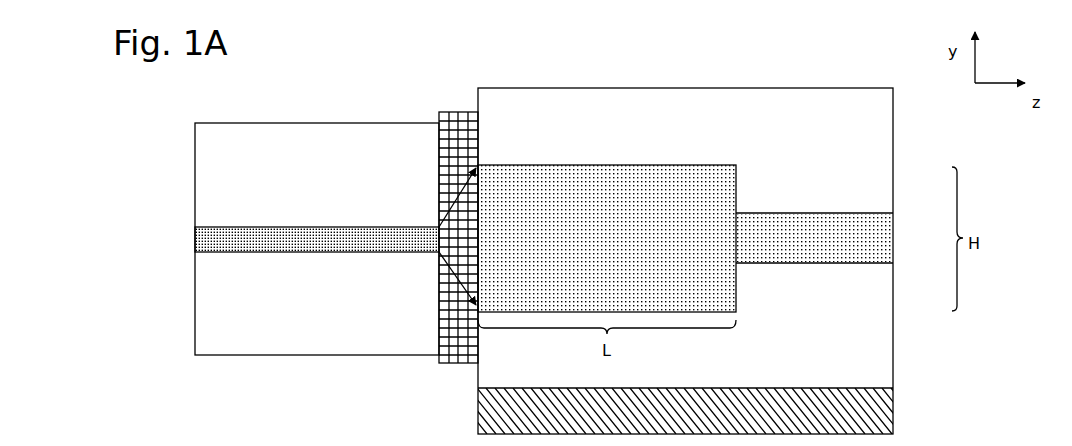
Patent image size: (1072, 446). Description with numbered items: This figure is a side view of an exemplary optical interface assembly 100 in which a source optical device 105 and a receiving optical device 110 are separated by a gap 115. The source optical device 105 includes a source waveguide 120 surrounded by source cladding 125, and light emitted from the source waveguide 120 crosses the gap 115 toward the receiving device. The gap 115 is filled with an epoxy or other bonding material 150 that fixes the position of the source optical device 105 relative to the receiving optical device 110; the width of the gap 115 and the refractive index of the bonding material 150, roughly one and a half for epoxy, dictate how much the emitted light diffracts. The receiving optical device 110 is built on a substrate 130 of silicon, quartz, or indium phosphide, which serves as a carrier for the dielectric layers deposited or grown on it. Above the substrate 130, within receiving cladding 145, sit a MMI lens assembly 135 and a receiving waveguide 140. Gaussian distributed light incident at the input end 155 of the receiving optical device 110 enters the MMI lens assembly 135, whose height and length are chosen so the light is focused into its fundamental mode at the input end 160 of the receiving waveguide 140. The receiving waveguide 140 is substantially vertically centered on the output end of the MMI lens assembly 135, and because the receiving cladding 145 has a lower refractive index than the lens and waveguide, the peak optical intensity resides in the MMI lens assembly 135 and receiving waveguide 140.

The optical interface assembly 100 is at (531, 244).
The source optical device 105 is at (265, 220).
The receiving optical device 110 is at (706, 241).
The gap 115 is at (453, 224).
The source waveguide 120 is at (196, 236).
The source cladding 125 is at (300, 153).
The substrate 130 is at (867, 420).
The MMI lens assembly 135 is at (586, 188).
The receiving waveguide 140 is at (873, 238).
The receiving cladding 145 is at (636, 105).
The bonding material 150 is at (468, 345).
The input end of receiving optical device 155 is at (465, 220).
The input end of receiving waveguide 160 is at (732, 228).